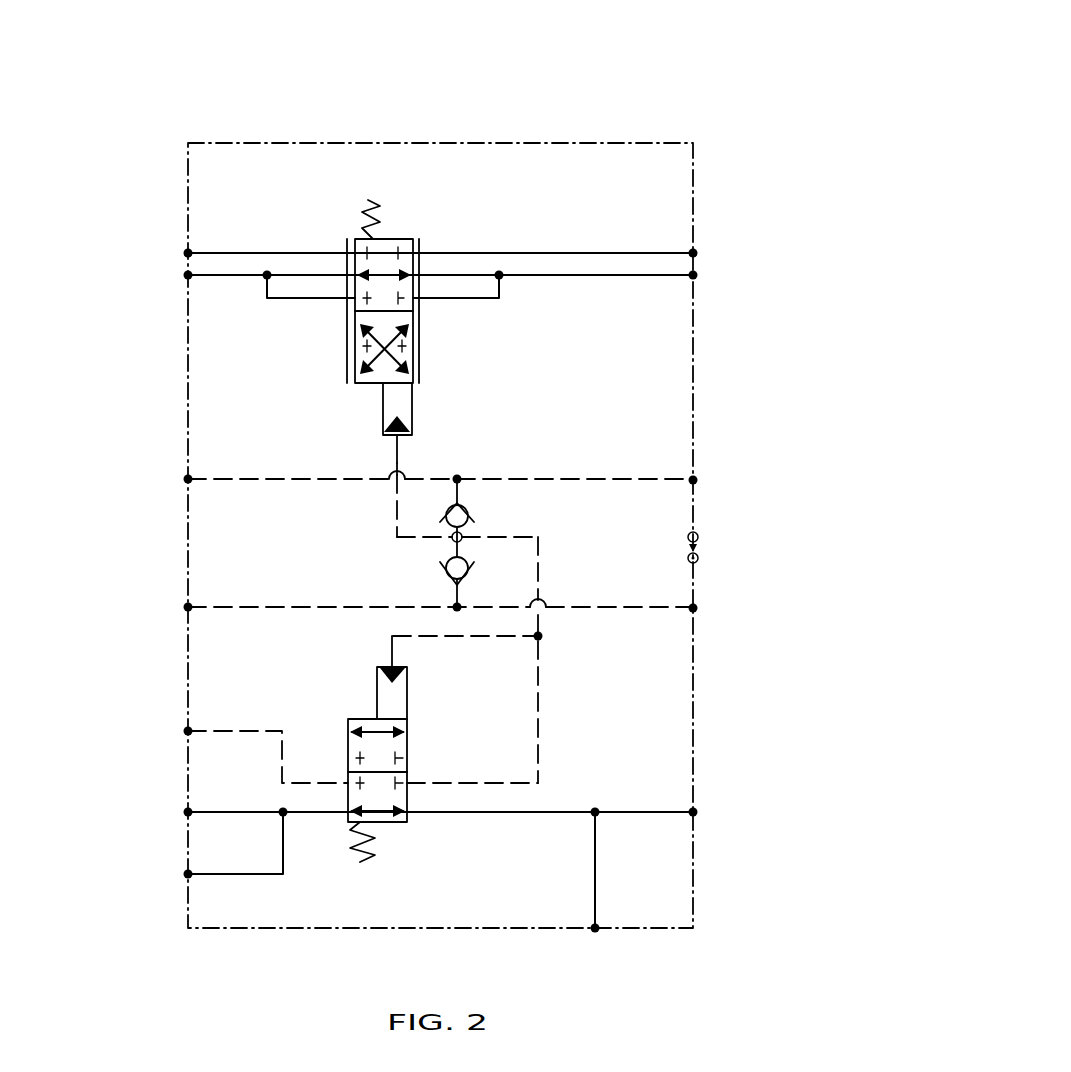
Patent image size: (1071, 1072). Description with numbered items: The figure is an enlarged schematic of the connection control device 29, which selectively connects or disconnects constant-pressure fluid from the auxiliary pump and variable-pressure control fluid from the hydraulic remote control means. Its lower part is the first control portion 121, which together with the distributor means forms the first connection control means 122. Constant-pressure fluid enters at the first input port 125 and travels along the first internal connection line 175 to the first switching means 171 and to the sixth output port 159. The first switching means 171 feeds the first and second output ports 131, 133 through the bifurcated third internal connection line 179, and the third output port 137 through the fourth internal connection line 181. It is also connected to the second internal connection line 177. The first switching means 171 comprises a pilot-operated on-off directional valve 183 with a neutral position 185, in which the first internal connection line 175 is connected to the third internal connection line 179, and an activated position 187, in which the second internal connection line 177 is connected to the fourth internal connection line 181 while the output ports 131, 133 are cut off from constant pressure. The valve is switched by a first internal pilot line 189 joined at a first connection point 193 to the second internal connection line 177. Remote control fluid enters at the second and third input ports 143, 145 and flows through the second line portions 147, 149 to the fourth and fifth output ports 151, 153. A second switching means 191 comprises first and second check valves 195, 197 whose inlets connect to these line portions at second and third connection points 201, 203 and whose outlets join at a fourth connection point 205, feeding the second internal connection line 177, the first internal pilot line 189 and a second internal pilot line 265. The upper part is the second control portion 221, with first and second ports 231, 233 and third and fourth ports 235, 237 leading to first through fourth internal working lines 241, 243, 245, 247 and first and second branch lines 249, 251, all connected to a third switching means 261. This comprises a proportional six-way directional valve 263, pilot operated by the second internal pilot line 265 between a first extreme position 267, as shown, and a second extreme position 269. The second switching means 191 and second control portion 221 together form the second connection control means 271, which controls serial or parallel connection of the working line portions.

The connection control device 29 is at (656, 122).
The first control portion 121 is at (670, 737).
The first connection control means 122 is at (158, 757).
The first input port 125 is at (597, 932).
The first output port 131 is at (186, 876).
The second output port 133 is at (186, 812).
The third output port 137 is at (186, 729).
The second input port 143 is at (186, 605).
The third input port 145 is at (186, 477).
The second line portion 147 is at (598, 606).
The second line portion 149 is at (550, 478).
The fourth output port 151 is at (697, 606).
The fifth output port 153 is at (697, 477).
The sixth output port 159 is at (697, 810).
The first switching means 171 is at (406, 781).
The first internal connection line 175 is at (567, 811).
The second internal connection line 177 is at (540, 708).
The third internal connection line 179 is at (300, 810).
The fourth internal connection line 181 is at (280, 730).
The on-off directional valve 183 is at (352, 717).
The neutral position 185 is at (348, 797).
The activated position 187 is at (347, 740).
The first internal pilot line 189 is at (390, 640).
The second switching means 191 is at (438, 548).
The first connection point 193 is at (542, 636).
The first check valve 195 is at (437, 570).
The second check valve 197 is at (471, 518).
The second connection point 201 is at (460, 605).
The third connection point 203 is at (459, 477).
The fourth connection point 205 is at (452, 537).
The second control portion 221 is at (665, 238).
The first port 231 is at (697, 275).
The second port 233 is at (186, 277).
The third port 235 is at (186, 250).
The fourth port 237 is at (697, 250).
The first internal working line 241 is at (590, 274).
The second internal working line 243 is at (241, 273).
The third internal working line 245 is at (290, 251).
The fourth internal working line 247 is at (555, 252).
The first branch line 249 is at (452, 296).
The second branch line 251 is at (326, 296).
The third switching means 261 is at (379, 259).
The proportional 6-way directional valve 263 is at (388, 238).
The second internal pilot line 265 is at (395, 445).
The first extreme position 267 is at (352, 304).
The second extreme position 269 is at (355, 358).
The second connection control means 271 is at (712, 362).